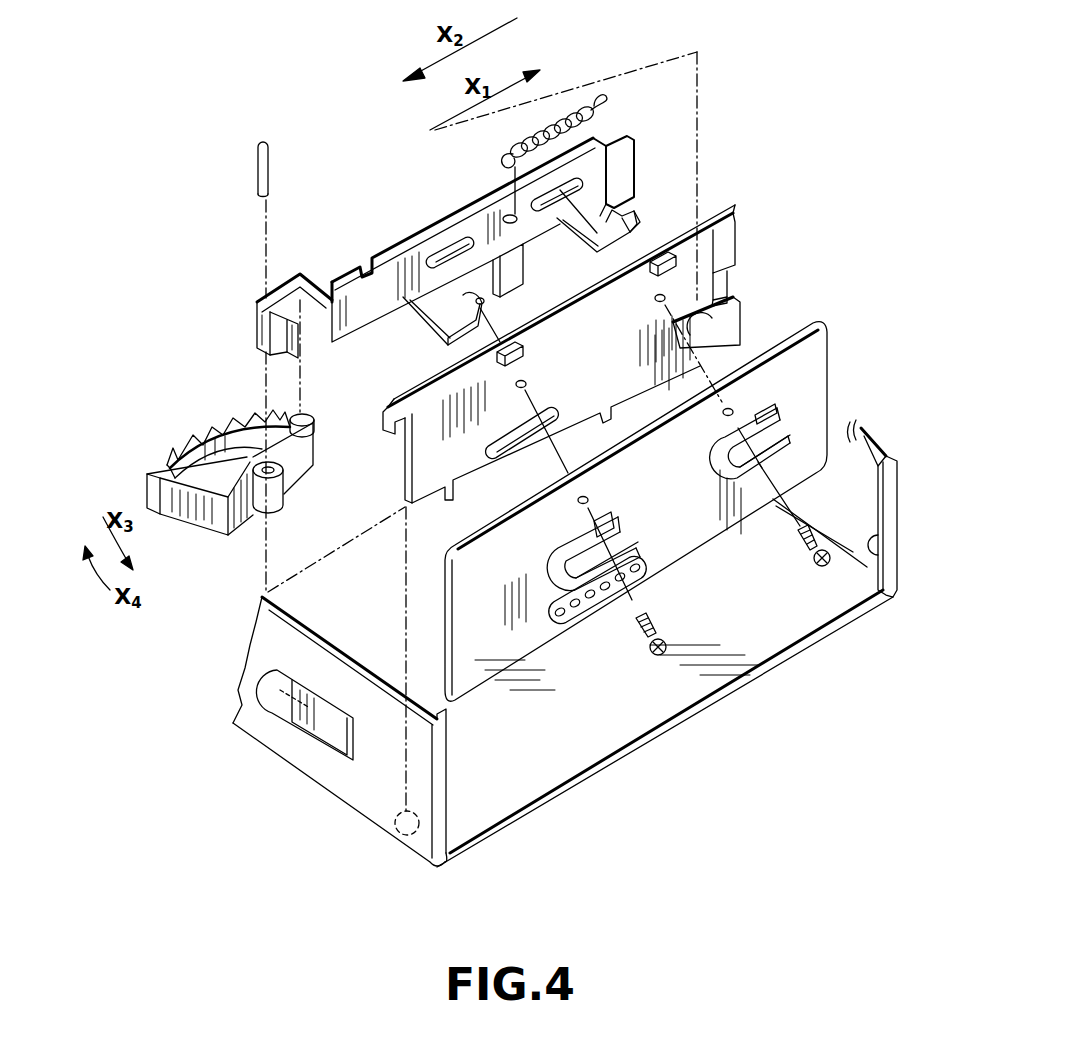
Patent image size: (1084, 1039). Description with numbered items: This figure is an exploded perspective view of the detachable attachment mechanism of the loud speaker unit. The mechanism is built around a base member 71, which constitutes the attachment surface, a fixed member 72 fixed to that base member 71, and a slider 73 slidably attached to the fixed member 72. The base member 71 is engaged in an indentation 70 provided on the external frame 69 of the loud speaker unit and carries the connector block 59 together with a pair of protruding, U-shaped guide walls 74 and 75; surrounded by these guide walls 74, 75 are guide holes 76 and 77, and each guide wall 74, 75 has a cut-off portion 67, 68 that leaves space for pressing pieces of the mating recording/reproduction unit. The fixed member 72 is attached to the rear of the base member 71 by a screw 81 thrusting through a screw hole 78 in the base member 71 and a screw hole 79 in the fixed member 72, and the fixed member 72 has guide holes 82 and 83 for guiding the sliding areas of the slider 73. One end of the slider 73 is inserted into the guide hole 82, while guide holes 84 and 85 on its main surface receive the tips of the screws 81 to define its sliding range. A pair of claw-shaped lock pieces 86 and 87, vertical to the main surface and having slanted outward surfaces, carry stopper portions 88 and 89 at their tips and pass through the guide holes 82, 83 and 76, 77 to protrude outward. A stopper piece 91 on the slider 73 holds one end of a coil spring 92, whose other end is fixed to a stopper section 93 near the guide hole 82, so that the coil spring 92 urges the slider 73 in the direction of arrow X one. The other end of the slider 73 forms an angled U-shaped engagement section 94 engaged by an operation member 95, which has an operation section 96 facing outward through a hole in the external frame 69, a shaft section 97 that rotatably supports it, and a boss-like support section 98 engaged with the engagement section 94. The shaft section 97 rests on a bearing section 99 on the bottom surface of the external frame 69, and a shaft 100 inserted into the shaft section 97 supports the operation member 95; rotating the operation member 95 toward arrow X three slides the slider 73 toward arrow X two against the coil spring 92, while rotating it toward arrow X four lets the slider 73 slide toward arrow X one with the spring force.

The connector block 59 is at (572, 622).
The cut-off portion 67 is at (768, 411).
The cut-off portion 68 is at (615, 528).
The external frame 69 is at (884, 452).
The indentation 70 is at (597, 628).
The base member 71 is at (838, 343).
The fixed member 72 is at (732, 200).
The slider 73 is at (630, 158).
The guide wall 74 is at (769, 422).
The guide wall 75 is at (601, 540).
The guide hole 76 is at (786, 440).
The guide hole 77 is at (643, 556).
The screw hole 78 is at (737, 408).
The screw hole 79 is at (526, 381).
The screw 81 is at (662, 640).
The guide hole 82 is at (746, 299).
The guide hole 83 is at (556, 413).
The guide hole 84 is at (582, 186).
The guide hole 85 is at (462, 242).
The lock piece 86 is at (588, 232).
The lock piece 87 is at (440, 328).
The stopper portion 88 is at (636, 213).
The stopper portion 89 is at (486, 298).
The stopper piece 91 is at (504, 212).
The coil spring 92 is at (556, 112).
The stopper section 93 is at (735, 274).
The engagement section 94 is at (257, 301).
The operation member 95 is at (269, 559).
The operation section 96 is at (185, 512).
The shaft section 97 is at (283, 505).
The support section 98 is at (308, 414).
The bearing section 99 is at (420, 822).
The shaft 100 is at (272, 166).